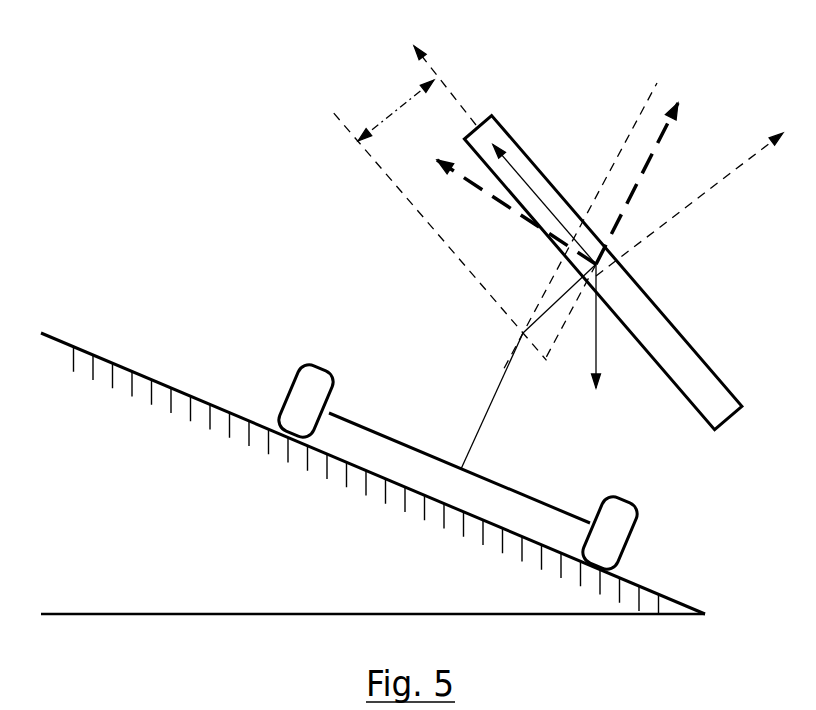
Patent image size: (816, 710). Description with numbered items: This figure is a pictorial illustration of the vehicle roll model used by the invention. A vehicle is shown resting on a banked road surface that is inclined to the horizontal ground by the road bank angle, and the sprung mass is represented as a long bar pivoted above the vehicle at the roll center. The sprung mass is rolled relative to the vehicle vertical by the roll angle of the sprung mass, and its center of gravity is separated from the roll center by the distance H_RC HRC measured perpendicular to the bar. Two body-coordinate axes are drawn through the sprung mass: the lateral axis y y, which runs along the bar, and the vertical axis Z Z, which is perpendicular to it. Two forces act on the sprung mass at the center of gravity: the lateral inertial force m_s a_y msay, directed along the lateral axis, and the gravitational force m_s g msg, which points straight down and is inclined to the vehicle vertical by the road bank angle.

The distance between center of gravity and roll center HRC is at (396, 96).
The sprung mass lateral inertial force msay is at (544, 180).
The sprung mass gravitational force msg is at (601, 342).
The lateral axis of body coordinate system y is at (445, 76).
The vertical axis of body coordinate system Z is at (689, 191).